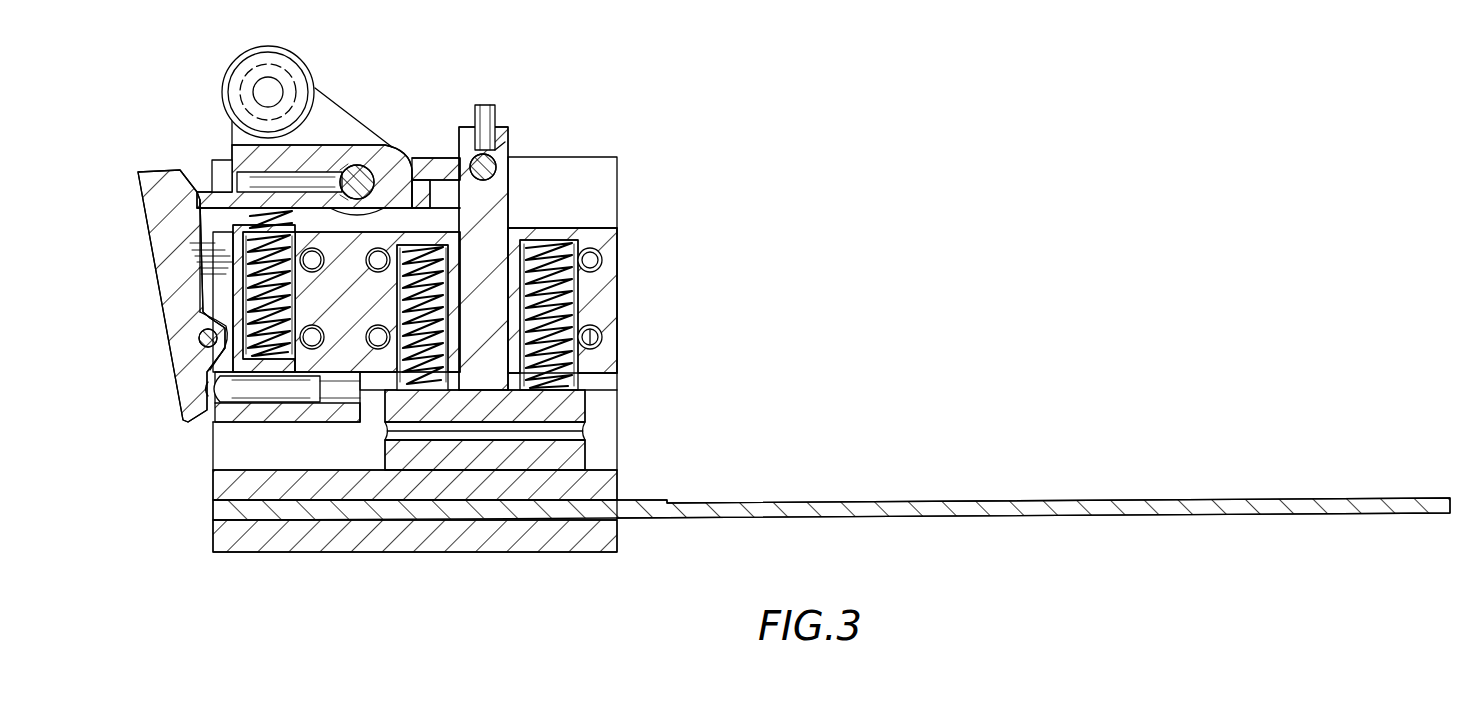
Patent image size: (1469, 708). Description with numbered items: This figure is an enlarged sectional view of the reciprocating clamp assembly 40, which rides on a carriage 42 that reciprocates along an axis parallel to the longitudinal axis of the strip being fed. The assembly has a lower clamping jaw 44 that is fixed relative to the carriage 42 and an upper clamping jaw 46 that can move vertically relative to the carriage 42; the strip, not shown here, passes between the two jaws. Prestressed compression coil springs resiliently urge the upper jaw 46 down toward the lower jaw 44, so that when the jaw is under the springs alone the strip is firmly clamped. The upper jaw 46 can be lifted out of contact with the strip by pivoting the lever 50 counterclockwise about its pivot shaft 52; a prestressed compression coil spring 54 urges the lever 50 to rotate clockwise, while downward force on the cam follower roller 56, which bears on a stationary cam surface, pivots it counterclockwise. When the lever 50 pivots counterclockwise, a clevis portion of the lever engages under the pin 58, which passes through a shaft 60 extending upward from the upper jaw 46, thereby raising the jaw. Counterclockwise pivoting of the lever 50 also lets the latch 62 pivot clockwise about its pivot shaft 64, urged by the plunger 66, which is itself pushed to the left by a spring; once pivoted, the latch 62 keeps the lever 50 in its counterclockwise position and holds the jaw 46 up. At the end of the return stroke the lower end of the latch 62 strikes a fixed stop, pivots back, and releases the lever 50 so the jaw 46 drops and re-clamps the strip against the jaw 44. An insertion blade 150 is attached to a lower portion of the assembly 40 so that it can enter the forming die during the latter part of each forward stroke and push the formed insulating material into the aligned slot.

The reciprocating clamp assembly 40 is at (280, 606).
The carriage 42 is at (598, 172).
The lower clamping jaw 44 is at (590, 465).
The upper clamping jaw 46 is at (572, 410).
The lever 50 is at (333, 124).
The pivot shaft 52 is at (378, 156).
The prestressed compression coil spring 54 is at (275, 272).
The cam follower roller 56 is at (300, 60).
The pin 58 is at (505, 140).
The shaft 60 is at (498, 196).
The latch 62 is at (160, 178).
The pivot shaft 64 is at (200, 340).
The plunger 66 is at (200, 418).
The insertion blade 150 is at (1068, 500).